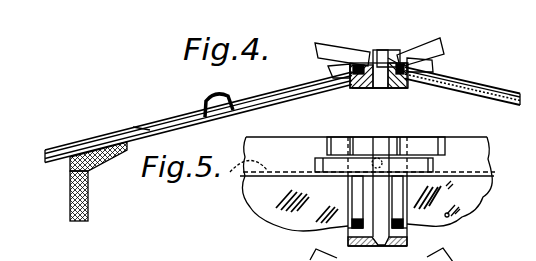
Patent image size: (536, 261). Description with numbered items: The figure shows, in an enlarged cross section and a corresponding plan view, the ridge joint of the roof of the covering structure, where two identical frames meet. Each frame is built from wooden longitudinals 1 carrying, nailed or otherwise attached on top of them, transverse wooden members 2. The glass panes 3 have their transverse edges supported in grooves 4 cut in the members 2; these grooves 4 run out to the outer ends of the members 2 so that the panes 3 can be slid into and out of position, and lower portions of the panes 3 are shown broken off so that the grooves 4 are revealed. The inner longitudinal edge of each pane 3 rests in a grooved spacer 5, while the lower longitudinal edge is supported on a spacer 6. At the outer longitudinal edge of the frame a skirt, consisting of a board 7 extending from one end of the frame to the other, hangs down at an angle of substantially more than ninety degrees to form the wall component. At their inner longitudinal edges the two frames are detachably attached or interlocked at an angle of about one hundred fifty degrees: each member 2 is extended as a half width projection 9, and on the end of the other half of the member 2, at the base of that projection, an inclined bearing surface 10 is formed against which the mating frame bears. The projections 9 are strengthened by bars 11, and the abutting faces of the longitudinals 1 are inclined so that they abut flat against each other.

In FIG. 4, the wooden longitudinal 1 is at (133, 128).
In FIG. 5, the wooden longitudinal 1 is at (382, 243).
In FIG. 4, the transverse wooden member 2 is at (250, 99).
In FIG. 5, the transverse wooden member 2 is at (464, 137).
In FIG. 4, the glass pane 3 is at (301, 86).
In FIG. 5, the glass pane 3 is at (474, 207).
In FIG. 4, the groove 4 is at (206, 103).
In FIG. 5, the groove 4 is at (246, 163).
In FIG. 4, the grooved spacer 5 is at (356, 66).
In FIG. 5, the grooved spacer 5 is at (350, 231).
In FIG. 4, the spacer 6 is at (106, 149).
In FIG. 4, the board 7 is at (69, 192).
In FIG. 4, the half width projection 9 is at (338, 46).
In FIG. 5, the half width projection 9 is at (313, 165).
In FIG. 4, the inclined bearing surface 10 is at (381, 80).
In FIG. 5, the inclined bearing surface 10 is at (374, 160).
In FIG. 4, the bar 11 is at (397, 63).
In FIG. 5, the bar 11 is at (409, 137).